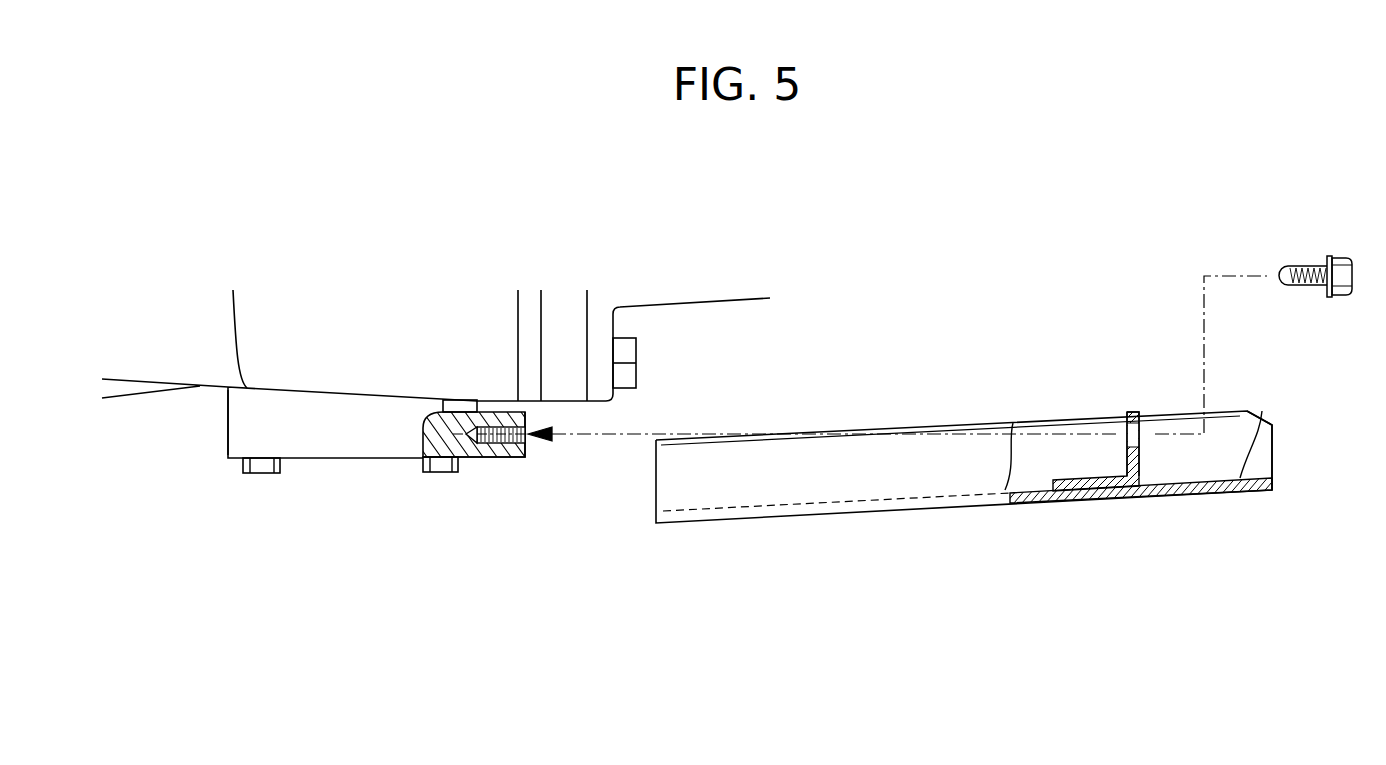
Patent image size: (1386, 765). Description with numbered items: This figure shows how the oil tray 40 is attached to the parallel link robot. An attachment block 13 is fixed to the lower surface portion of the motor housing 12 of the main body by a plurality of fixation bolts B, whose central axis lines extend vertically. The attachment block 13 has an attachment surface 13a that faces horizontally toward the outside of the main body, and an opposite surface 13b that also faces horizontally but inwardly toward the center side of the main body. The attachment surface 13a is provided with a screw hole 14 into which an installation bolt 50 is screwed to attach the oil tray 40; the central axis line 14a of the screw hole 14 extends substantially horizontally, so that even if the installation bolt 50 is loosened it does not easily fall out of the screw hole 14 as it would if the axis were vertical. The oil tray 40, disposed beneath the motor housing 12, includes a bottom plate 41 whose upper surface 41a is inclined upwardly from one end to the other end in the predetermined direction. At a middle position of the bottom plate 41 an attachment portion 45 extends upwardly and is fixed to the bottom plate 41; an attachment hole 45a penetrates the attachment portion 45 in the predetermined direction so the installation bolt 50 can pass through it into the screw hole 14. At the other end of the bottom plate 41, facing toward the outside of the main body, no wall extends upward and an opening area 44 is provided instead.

The motor housing 12 is at (725, 303).
The attachment block 13 is at (335, 458).
The attachment surface 13a is at (528, 453).
The surface 13b is at (228, 428).
The screw hole 14 is at (508, 443).
The central axis line 14a is at (463, 440).
The fixation bolt B is at (262, 473).
The oil tray 40 is at (905, 510).
The bottom plate 41 is at (1090, 503).
The upper surface 41a is at (1262, 411).
The opening area 44 is at (1267, 460).
The attachment portion 45 is at (1139, 463).
The attachment hole 45a is at (1128, 443).
The installation bolt 50 is at (1340, 256).